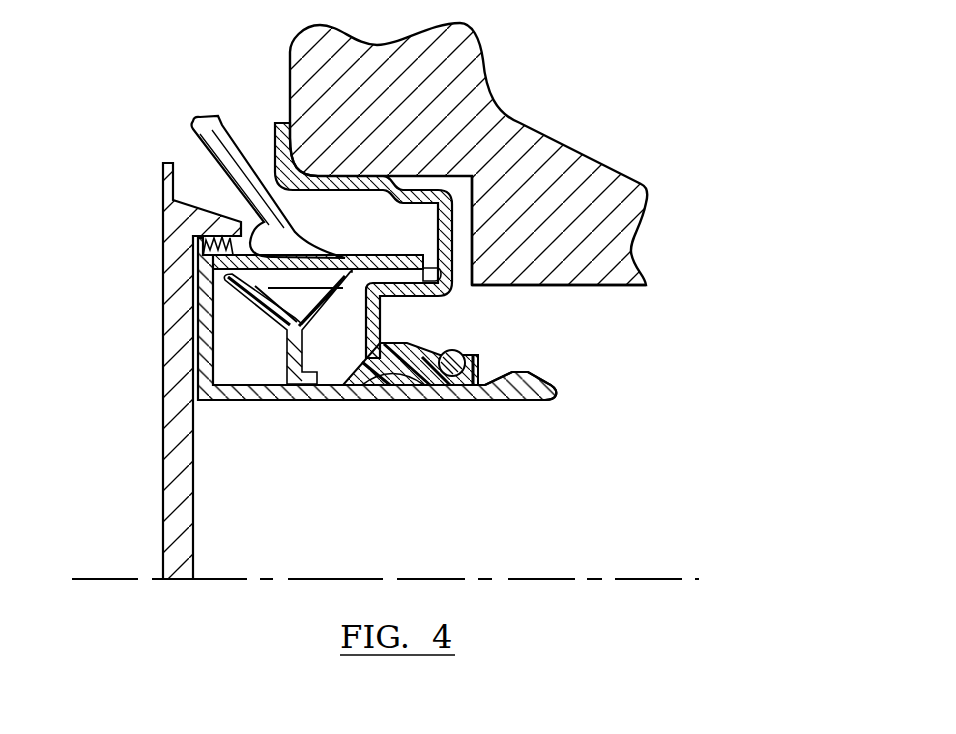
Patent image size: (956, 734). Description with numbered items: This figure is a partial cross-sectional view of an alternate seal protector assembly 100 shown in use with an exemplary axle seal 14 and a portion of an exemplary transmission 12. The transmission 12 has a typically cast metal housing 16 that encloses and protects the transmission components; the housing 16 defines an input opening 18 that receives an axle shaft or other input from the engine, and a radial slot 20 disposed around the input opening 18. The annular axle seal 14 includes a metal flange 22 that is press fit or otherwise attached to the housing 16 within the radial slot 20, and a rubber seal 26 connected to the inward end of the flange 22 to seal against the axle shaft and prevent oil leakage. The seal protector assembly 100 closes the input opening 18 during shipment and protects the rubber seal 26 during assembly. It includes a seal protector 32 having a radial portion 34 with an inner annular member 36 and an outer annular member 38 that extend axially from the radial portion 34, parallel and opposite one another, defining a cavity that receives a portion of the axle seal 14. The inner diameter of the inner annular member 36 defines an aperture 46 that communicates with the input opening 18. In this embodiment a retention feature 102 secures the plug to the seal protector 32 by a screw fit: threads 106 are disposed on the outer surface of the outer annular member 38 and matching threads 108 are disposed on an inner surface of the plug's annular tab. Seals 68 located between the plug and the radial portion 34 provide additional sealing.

The seal protector assembly 100 is at (203, 308).
The retention feature 102 is at (198, 176).
The threads 108 is at (207, 212).
The seals 68 is at (195, 257).
The threads 106 is at (205, 263).
The transmission 12 is at (492, 178).
The housing 16 is at (516, 118).
The input opening 18 is at (561, 288).
The radial slot 20 is at (463, 274).
The axle seal 14 is at (416, 286).
The metal flange 22 is at (333, 186).
The outer annular member 38 is at (372, 262).
The radial portion 34 is at (214, 365).
The inner annular member 36 is at (318, 406).
The aperture 46 is at (387, 406).
The seal protector 32 is at (568, 392).
The rubber seal 26 is at (394, 350).